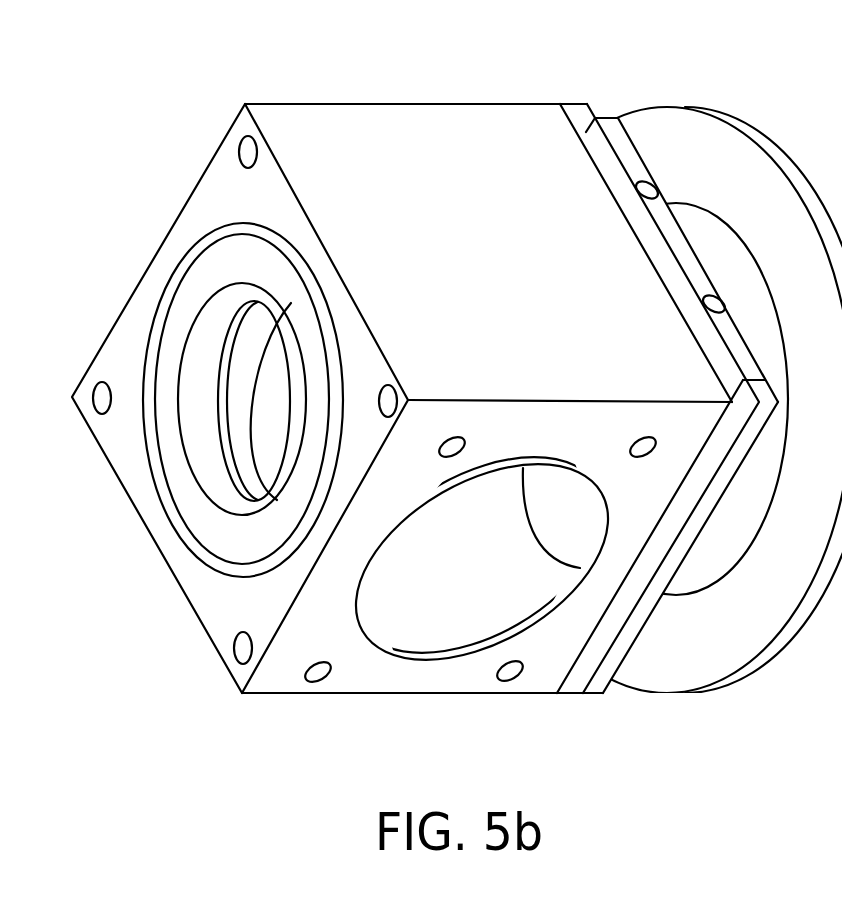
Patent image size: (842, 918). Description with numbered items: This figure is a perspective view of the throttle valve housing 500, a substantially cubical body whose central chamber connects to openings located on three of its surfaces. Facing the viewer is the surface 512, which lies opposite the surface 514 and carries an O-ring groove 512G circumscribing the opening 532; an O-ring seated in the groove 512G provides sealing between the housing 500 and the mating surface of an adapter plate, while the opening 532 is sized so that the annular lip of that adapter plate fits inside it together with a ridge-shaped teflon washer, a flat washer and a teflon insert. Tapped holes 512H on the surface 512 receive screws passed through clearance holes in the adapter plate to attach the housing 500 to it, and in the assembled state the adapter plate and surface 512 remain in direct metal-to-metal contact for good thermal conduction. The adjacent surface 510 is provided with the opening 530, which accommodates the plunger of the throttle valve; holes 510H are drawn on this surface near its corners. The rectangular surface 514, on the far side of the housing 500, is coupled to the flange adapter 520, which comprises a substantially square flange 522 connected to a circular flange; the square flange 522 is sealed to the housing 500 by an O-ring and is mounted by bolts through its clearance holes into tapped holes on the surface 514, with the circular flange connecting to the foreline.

The throttle valve housing 500 is at (411, 130).
The surface 510 is at (533, 683).
The mounting holes in front face 510H is at (318, 685).
The surface 512 is at (197, 217).
The tapped holes 512H is at (240, 152).
The O-ring groove 512G is at (170, 297).
The surface 514 is at (614, 119).
The flange adapter 520 is at (727, 143).
The square flange 522 is at (603, 694).
The opening 530 is at (420, 640).
The opening 532 is at (267, 467).